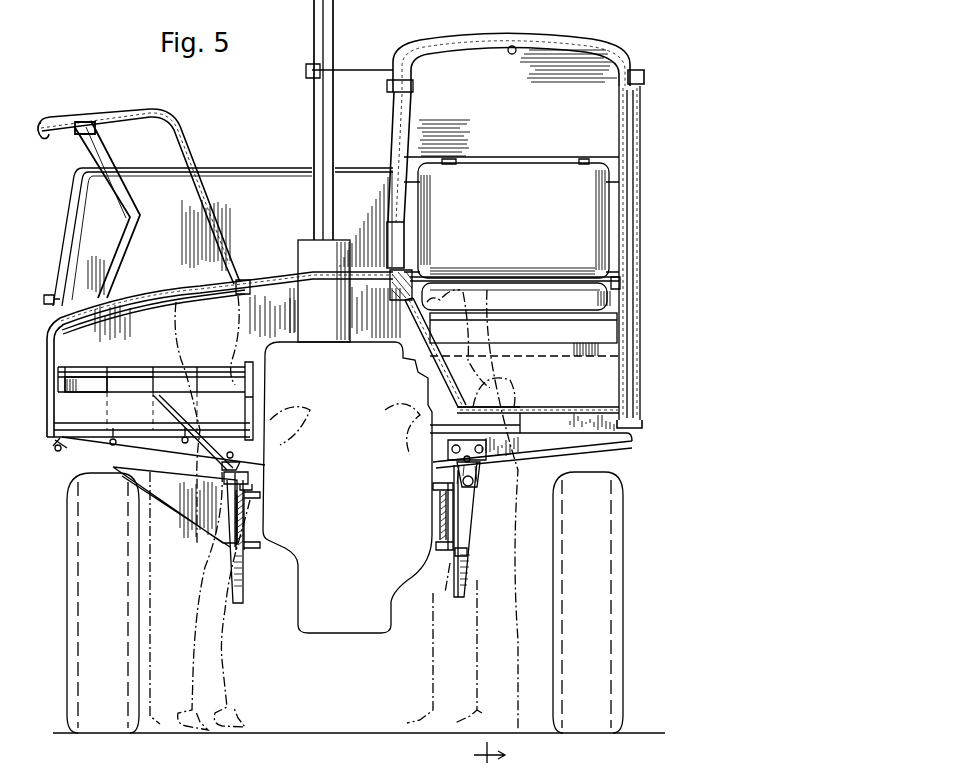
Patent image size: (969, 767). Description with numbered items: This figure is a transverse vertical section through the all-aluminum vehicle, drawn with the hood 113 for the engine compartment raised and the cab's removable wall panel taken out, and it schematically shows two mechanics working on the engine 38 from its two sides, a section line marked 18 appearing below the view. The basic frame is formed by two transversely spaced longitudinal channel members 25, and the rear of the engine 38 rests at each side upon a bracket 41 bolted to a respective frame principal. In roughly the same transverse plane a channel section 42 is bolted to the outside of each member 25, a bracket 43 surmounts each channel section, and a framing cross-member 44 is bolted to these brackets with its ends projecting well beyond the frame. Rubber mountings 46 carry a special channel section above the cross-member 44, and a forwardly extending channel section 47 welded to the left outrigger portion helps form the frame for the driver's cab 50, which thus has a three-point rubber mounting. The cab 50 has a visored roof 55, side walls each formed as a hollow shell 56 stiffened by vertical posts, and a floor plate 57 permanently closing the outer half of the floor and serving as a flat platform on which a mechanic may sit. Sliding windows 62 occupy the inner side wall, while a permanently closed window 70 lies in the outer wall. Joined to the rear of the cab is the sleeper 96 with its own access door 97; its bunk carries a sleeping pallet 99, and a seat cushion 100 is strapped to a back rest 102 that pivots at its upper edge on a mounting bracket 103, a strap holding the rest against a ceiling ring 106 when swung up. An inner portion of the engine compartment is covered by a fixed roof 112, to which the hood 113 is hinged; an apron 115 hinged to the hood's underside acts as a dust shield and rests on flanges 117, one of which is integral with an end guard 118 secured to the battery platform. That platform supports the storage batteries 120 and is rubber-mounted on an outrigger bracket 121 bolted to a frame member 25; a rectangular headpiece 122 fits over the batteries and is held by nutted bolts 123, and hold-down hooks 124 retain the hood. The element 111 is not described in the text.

The section line 18 is at (474, 754).
The longitudinal channel member 25 is at (254, 480).
The engine 38 is at (295, 340).
The bracket 41 is at (256, 518).
The channel section 42 is at (240, 585).
The bracket 43 is at (245, 464).
The framing cross-member 44 is at (592, 442).
The rubber mounting 46 is at (592, 422).
The channel section 47 is at (520, 442).
The driver's cab 50 is at (522, 218).
The visored roof 55 is at (485, 38).
The hollow shell 56 is at (386, 276).
The floor plate 57 is at (543, 405).
The window 62 is at (395, 122).
The window 70 is at (624, 118).
The sleeper 96 is at (263, 174).
The access door 97 is at (76, 213).
The sleeping pallet 99 is at (592, 330).
The seat cushion 100 is at (598, 300).
The back rest 102 is at (557, 172).
The mounting bracket 103 is at (590, 160).
The ceiling ring 106 is at (516, 55).
The lower rail 111 is at (154, 300).
The fixed roof 112 is at (273, 276).
The hood 113 is at (168, 118).
The apron 115 is at (130, 234).
The flange 117 is at (174, 420).
The end guard 118 is at (78, 410).
The storage battery 120 is at (94, 385).
The outrigger bracket 121 is at (188, 508).
The headpiece 122 is at (125, 386).
The nutted bolt 123 is at (255, 372).
The hold-down hook 124 is at (64, 452).